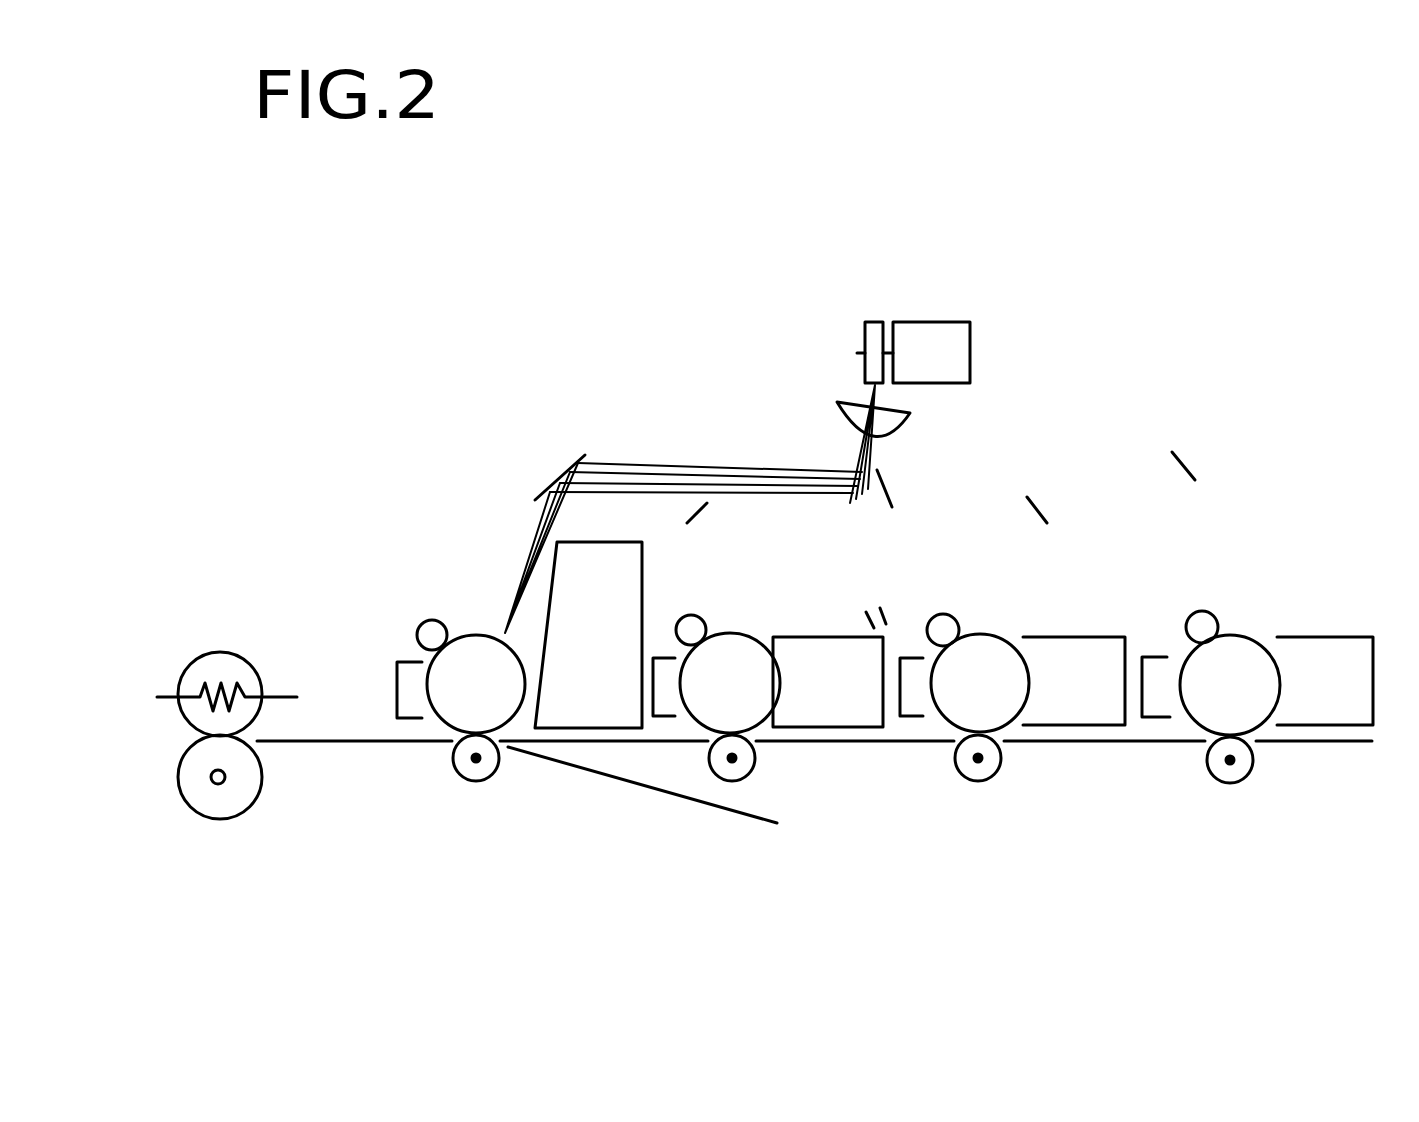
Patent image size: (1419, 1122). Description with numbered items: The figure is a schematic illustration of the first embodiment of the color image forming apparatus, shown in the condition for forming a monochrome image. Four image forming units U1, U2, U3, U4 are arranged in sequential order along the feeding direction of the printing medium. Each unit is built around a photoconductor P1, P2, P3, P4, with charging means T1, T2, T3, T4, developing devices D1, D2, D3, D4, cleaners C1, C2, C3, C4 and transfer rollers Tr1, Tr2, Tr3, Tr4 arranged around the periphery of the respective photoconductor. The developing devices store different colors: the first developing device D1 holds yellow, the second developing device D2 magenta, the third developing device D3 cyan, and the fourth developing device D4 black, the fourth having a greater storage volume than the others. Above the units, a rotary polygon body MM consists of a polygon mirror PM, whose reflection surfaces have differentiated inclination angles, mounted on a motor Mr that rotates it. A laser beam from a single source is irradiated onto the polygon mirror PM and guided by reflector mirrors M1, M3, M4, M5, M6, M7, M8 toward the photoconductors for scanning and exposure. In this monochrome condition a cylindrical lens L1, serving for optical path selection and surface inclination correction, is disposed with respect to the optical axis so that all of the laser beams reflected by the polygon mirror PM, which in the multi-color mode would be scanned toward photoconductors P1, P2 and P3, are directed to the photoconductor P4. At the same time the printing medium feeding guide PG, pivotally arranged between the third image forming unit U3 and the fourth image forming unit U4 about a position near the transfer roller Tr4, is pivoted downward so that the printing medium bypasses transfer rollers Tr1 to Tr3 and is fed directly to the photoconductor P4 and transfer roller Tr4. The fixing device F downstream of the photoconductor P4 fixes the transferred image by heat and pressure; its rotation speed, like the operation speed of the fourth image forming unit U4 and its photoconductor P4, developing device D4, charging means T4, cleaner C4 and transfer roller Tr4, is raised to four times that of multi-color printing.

The fixing device F is at (238, 653).
The printing medium feeding guide PG is at (552, 764).
The photoconductor P1 is at (1243, 635).
The photoconductor P2 is at (1003, 633).
The photoconductor P3 is at (743, 633).
The photoconductor P4 is at (483, 635).
The charging means T1 is at (1207, 610).
The charging means T2 is at (957, 617).
The charging means T3 is at (697, 614).
The charging means T4 is at (425, 620).
The cleaner C1 is at (1155, 655).
The cleaner C2 is at (912, 722).
The cleaner C3 is at (658, 717).
The cleaner C4 is at (407, 720).
The developing device D1 is at (1348, 728).
The developing device D2 is at (1102, 727).
The developing device D3 is at (842, 730).
The developing device D4 is at (597, 542).
The transfer roller Tr1 is at (1227, 783).
The transfer roller Tr2 is at (990, 783).
The transfer roller Tr3 is at (733, 781).
The transfer roller Tr4 is at (477, 781).
The image forming unit U1 is at (1183, 750).
The image forming unit U2 is at (943, 750).
The image forming unit U3 is at (685, 746).
The image forming unit U4 is at (435, 746).
The reflector mirror M1 is at (892, 490).
The reflector mirror M3 is at (885, 615).
The reflector mirror M4 is at (870, 620).
The reflector mirror M5 is at (545, 488).
The reflector mirror M6 is at (710, 512).
The reflector mirror M7 is at (1180, 450).
The reflector mirror M8 is at (1027, 497).
The cylindrical lens L1 is at (852, 404).
The rotary polygon body MM is at (931, 261).
The polygon mirror PM is at (875, 320).
The motor Mr is at (948, 297).